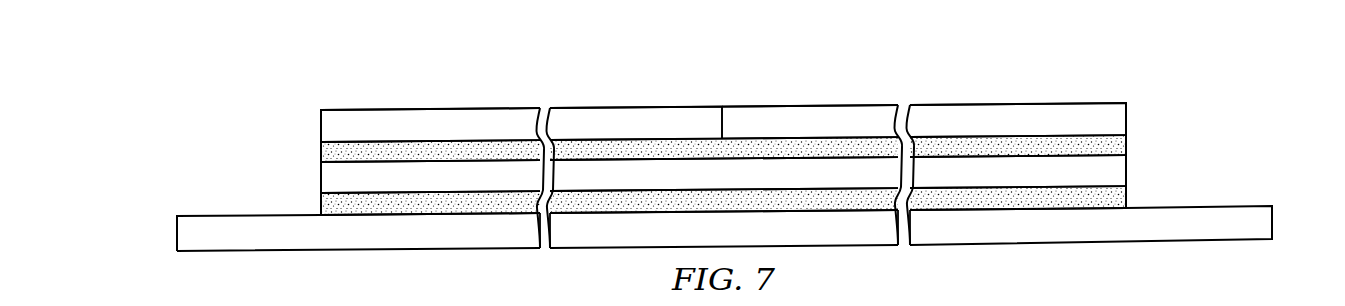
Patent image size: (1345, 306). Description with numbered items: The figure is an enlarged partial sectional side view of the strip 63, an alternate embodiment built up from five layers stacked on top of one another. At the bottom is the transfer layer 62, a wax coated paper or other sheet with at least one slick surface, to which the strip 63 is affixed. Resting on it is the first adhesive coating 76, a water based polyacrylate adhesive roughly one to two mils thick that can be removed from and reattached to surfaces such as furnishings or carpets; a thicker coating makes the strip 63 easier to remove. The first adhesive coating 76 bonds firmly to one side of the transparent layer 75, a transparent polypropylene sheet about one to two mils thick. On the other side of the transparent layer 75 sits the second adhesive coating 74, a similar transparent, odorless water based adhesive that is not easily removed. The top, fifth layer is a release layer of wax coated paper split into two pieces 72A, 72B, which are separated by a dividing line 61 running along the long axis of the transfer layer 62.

The dividing line 61 is at (722, 117).
The transfer layer 62 is at (177, 235).
The strip 63 is at (614, 52).
The release layer piece 72A is at (321, 123).
The release layer piece 72B is at (1127, 114).
The second adhesive coating 74 is at (321, 152).
The transparent layer 75 is at (321, 185).
The first adhesive coating 76 is at (321, 212).